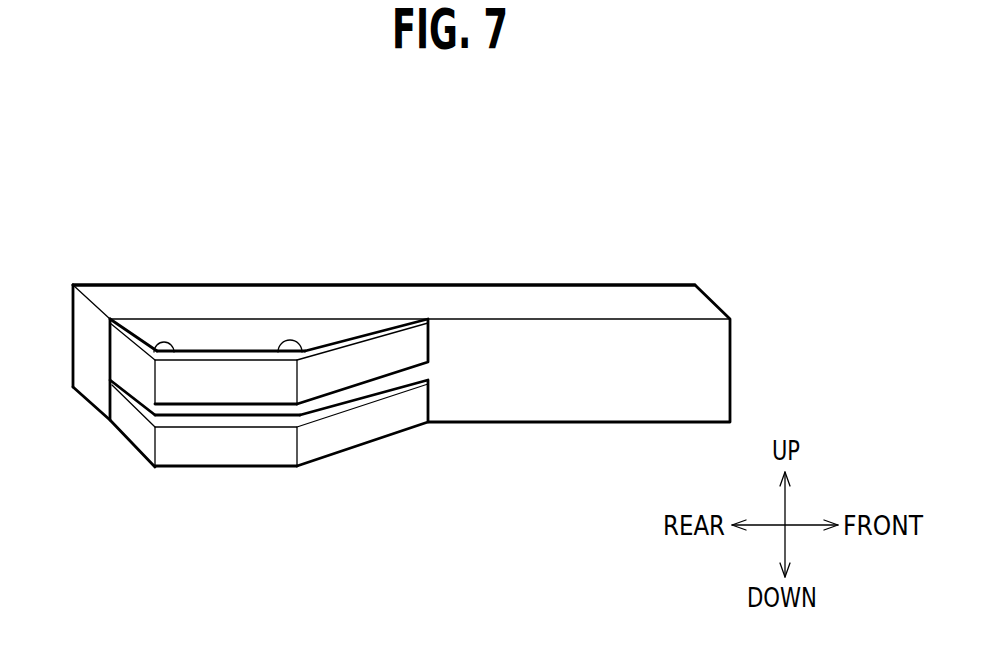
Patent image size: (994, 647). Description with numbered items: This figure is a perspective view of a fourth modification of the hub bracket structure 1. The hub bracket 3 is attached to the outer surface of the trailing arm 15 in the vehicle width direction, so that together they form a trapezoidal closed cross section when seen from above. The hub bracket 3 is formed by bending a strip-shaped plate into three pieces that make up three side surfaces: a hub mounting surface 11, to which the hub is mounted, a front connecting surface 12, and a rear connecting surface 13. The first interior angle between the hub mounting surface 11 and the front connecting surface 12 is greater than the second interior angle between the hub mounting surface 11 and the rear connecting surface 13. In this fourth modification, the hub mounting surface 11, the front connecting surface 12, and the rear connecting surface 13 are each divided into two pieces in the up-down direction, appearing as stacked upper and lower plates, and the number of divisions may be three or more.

The hub bracket structure 1 is at (510, 211).
The hub bracket 3 is at (145, 495).
The hub mounting surface 11 is at (208, 383).
The front connecting surface 12 is at (390, 350).
The rear connecting surface 13 is at (120, 350).
The trailing arm 15 is at (658, 294).